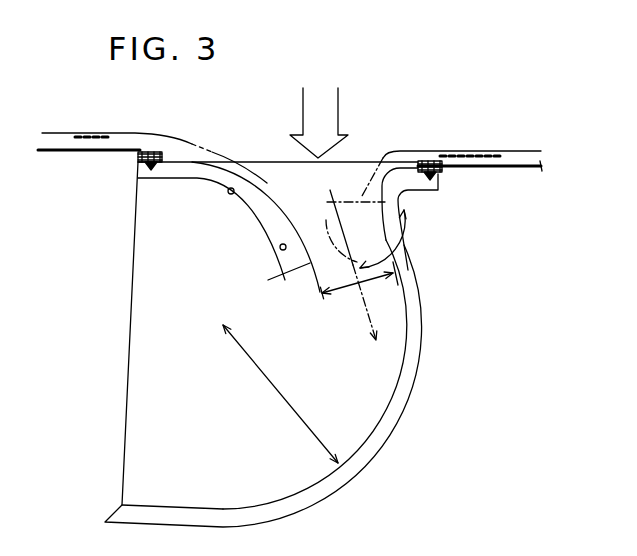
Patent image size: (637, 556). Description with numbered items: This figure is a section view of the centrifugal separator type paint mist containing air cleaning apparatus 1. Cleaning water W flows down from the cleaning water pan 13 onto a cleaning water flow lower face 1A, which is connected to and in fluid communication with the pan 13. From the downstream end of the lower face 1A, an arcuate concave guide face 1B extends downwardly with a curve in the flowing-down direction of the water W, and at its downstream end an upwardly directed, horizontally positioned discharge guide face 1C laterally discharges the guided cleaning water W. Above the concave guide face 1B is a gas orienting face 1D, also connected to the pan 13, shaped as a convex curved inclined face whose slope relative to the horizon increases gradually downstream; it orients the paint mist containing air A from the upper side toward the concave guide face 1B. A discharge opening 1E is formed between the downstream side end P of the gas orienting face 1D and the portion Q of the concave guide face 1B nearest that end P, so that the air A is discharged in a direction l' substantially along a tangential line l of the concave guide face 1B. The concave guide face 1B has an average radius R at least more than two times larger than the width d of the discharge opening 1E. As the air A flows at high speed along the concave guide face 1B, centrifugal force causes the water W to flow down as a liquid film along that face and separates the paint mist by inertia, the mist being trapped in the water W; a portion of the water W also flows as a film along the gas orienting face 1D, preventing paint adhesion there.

The centrifugal separator type paint mist containing air cleaning apparatus 1 is at (427, 390).
The cleaning water flow lower face 1A is at (382, 176).
The arcuate concave guide face 1B is at (377, 430).
The discharge guide face 1C is at (173, 500).
The gas orienting face 1D is at (295, 204).
The discharge opening 1E is at (375, 290).
The cleaning water pan 13 is at (520, 170).
The cleaning water W is at (117, 132).
The paint mist containing air A is at (303, 108).
The average radius R is at (277, 394).
The downstream side end P is at (318, 291).
The width of the discharge opening d is at (349, 297).
The tangential line l is at (356, 215).
The discharge direction l' is at (333, 236).
The portion of the concave guide face Q is at (400, 266).